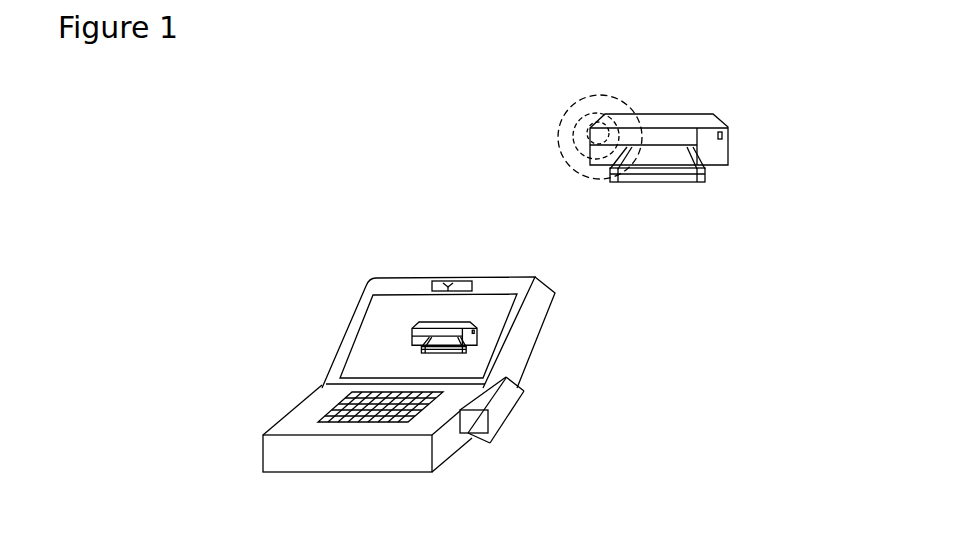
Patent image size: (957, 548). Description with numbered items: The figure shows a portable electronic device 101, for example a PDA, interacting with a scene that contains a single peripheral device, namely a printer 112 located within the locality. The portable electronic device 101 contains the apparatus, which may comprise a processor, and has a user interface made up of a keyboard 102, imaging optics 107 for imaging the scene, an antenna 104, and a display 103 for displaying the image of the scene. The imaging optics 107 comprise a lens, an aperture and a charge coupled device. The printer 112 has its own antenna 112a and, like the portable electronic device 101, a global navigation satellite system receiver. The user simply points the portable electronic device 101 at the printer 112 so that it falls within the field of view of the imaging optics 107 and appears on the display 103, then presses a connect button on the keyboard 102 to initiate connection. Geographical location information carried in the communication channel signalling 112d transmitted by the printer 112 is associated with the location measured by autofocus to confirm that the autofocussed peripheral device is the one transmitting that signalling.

The portable electronic device 101 is at (360, 359).
The keyboard 102 is at (320, 410).
The display 103 is at (377, 320).
The antenna 104 is at (432, 285).
The imaging optics 107 is at (503, 413).
The printer 112 is at (696, 128).
The antenna 112a is at (598, 138).
The communication channel signalling 112d is at (620, 100).